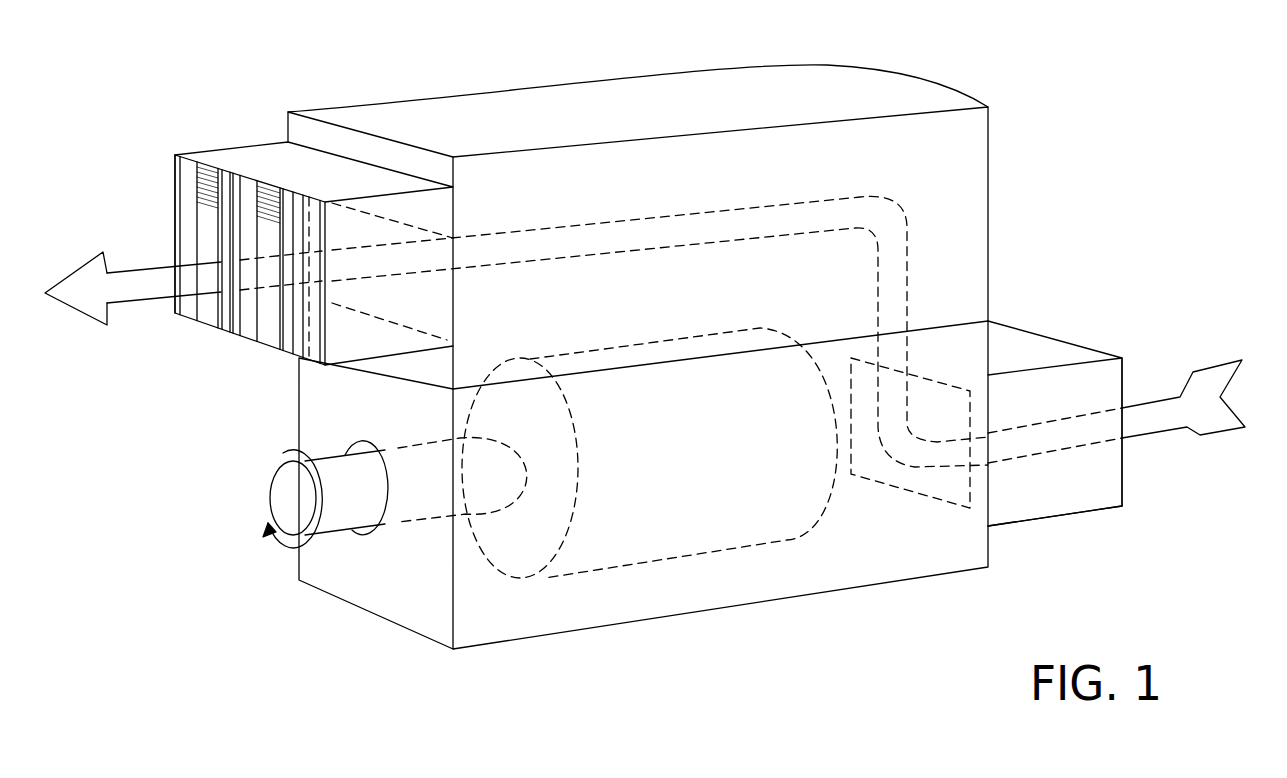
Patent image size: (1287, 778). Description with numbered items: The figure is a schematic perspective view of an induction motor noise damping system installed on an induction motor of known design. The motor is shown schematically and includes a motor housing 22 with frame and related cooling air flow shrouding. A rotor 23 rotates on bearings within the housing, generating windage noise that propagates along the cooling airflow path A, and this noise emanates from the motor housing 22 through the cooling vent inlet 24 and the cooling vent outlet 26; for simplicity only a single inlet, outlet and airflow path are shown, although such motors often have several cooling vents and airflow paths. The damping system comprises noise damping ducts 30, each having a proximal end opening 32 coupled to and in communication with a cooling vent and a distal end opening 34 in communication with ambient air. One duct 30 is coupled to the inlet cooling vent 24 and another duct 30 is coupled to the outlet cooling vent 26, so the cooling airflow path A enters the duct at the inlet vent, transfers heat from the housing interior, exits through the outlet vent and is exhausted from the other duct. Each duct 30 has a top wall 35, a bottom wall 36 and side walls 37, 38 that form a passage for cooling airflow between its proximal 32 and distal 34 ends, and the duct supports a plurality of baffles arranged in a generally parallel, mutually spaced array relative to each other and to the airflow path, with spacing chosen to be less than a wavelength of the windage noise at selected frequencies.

The motor housing 22 is at (392, 606).
The rotor 23 is at (678, 513).
The cooling vent inlet 24 is at (915, 500).
The cooling vent outlet 26 is at (417, 230).
The noise damping duct 30 is at (226, 143).
The proximal end opening 32 is at (342, 150).
The distal end opening 34 is at (173, 205).
The top wall 35 is at (283, 157).
The bottom wall 36 is at (307, 373).
The side wall 37 is at (188, 141).
The side wall 38 is at (390, 337).